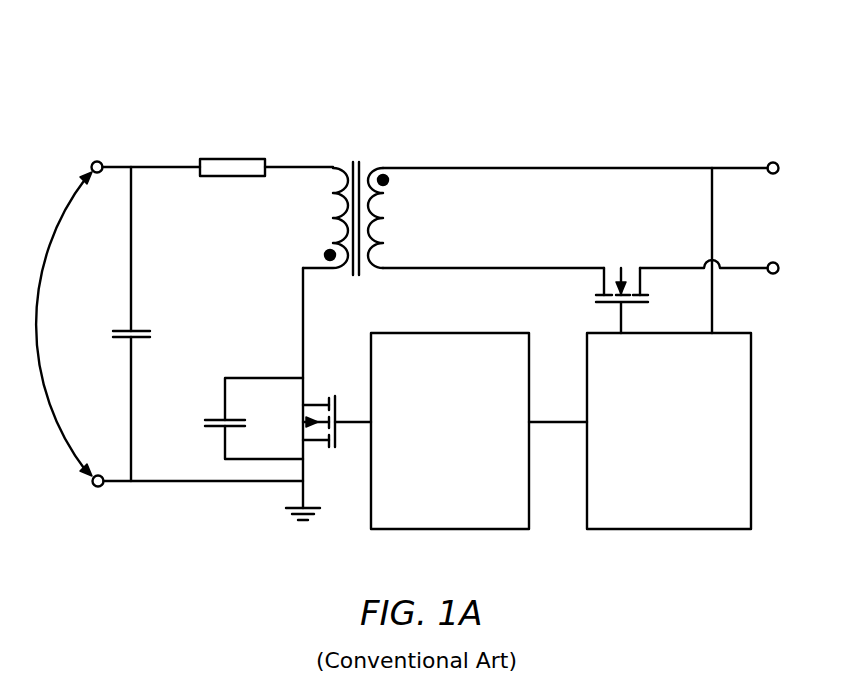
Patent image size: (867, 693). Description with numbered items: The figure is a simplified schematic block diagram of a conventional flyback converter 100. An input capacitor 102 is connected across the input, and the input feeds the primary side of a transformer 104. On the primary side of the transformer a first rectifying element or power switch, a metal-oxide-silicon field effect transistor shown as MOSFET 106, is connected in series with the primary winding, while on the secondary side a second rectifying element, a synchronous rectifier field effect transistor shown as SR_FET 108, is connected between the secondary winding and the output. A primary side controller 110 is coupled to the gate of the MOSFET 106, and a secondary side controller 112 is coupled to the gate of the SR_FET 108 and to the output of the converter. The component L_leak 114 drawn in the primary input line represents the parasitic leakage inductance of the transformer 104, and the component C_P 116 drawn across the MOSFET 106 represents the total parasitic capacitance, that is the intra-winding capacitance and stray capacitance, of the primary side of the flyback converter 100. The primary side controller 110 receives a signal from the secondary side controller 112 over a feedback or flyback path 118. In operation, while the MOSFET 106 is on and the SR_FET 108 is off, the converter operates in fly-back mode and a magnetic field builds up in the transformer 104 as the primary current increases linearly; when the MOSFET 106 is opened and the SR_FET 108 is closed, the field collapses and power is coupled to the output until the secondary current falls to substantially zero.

The flyback converter 100 is at (190, 58).
The input capacitor 102 is at (131, 331).
The transformer 104 is at (353, 150).
The MOSFET 106 is at (332, 378).
The SR_FET 108 is at (621, 248).
The primary side controller 110 is at (430, 508).
The secondary side controller 112 is at (663, 509).
The L_leak 114 is at (235, 177).
The C_P 116 is at (226, 420).
The feedback or flyback path 118 is at (561, 424).